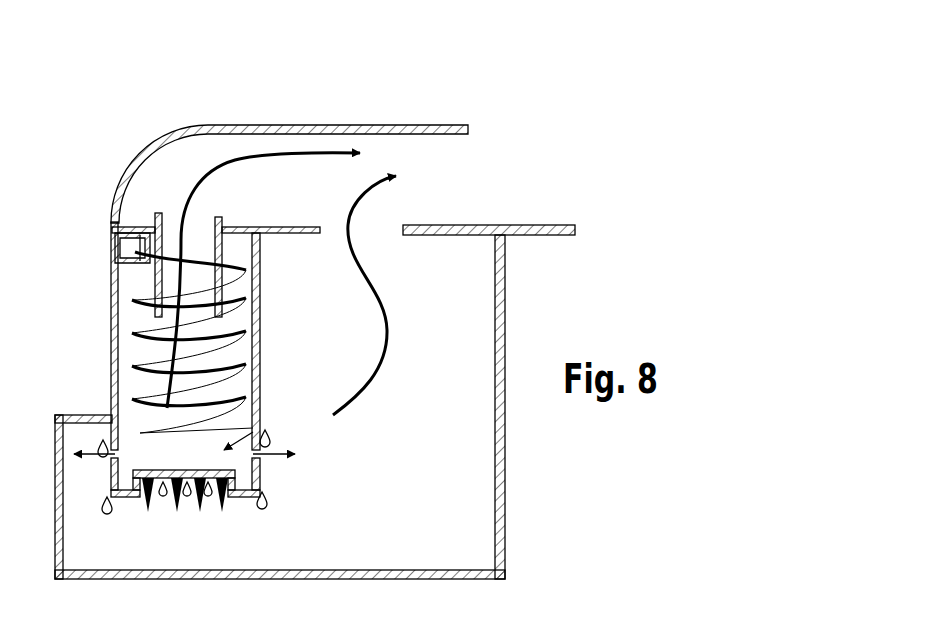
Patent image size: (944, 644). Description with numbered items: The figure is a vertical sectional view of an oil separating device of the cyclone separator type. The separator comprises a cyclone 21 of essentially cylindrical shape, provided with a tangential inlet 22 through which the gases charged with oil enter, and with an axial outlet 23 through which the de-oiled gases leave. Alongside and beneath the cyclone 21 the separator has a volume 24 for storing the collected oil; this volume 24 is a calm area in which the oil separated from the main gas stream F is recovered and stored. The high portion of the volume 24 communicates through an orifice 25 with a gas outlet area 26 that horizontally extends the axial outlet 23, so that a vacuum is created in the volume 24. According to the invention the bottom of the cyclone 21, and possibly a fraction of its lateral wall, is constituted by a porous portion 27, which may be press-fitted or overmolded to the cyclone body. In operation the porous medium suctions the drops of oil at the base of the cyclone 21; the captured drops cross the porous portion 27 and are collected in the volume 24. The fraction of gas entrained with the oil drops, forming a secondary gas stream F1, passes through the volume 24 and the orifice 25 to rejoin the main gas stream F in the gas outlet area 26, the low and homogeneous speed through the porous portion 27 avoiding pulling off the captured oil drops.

The cyclone 21 is at (116, 349).
The tangential inlet 22 is at (122, 242).
The axial outlet 23 is at (172, 225).
The volume for storing collected oil 24 is at (458, 495).
The orifice 25 is at (382, 232).
The gas outlet area 26 is at (395, 152).
The porous portion 27 is at (110, 474).
The main gas stream F is at (252, 158).
The secondary gas stream F1 is at (386, 362).